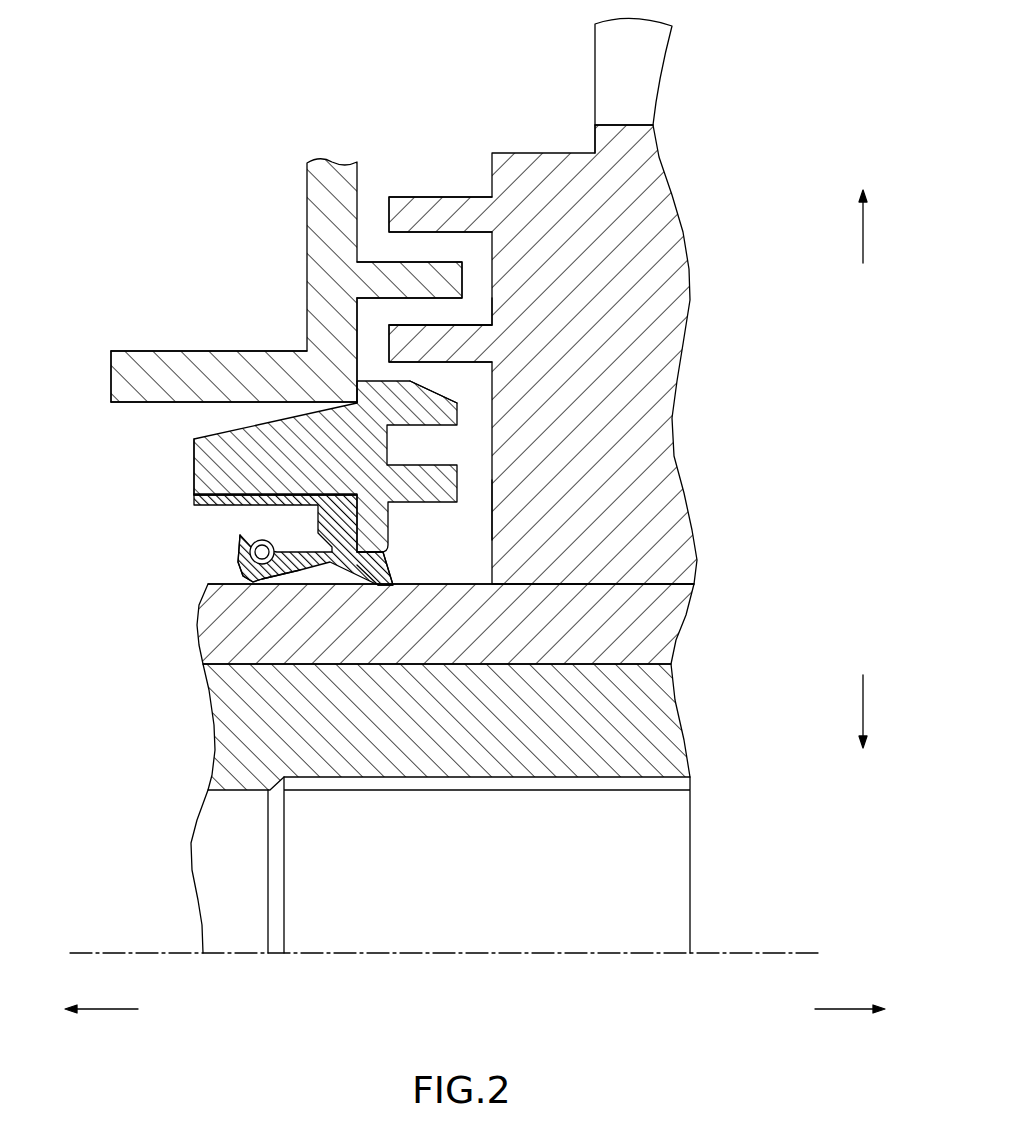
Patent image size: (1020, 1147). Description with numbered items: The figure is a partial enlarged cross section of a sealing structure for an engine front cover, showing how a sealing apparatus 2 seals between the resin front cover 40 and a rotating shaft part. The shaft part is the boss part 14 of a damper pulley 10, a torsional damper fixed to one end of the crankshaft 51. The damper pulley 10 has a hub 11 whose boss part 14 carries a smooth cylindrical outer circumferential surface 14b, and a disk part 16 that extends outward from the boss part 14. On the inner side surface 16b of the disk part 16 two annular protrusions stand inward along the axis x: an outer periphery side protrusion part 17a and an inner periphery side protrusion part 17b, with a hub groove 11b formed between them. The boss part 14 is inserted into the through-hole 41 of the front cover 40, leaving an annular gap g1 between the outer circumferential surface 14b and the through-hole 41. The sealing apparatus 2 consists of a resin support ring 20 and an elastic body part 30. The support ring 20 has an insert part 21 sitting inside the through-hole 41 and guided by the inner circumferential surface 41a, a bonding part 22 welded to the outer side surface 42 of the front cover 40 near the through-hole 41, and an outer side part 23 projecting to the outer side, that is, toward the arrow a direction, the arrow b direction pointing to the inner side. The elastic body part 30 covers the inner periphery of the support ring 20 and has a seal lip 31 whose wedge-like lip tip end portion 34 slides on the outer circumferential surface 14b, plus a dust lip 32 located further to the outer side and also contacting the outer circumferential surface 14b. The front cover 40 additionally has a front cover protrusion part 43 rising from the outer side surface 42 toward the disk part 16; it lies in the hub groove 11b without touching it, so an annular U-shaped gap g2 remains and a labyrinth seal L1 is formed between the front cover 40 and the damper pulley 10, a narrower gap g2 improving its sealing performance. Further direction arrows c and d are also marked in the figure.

The sealing apparatus 2 is at (418, 548).
The damper pulley 10 is at (660, 70).
The hub 11 is at (678, 468).
The hub groove 11b is at (405, 312).
The boss part 14 is at (227, 601).
The outer circumferential surface 14b is at (452, 583).
The disk part 16 is at (610, 157).
The inner side surface 16b is at (492, 518).
The outer periphery side protrusion part 17a is at (418, 207).
The inner periphery side protrusion part 17b is at (458, 352).
The support ring 20 is at (428, 385).
The insert part 21 is at (207, 469).
The bonding part 22 is at (356, 386).
The outer side part 23 is at (418, 408).
The elastic body part 30 is at (208, 531).
The seal lip 31 is at (330, 573).
The dust lip 32 is at (372, 581).
The lip tip end portion 34 is at (251, 582).
The front cover 40 is at (305, 187).
The through-hole 41 is at (133, 460).
The inner circumferential surface 41a is at (160, 404).
The outer side surface 42 is at (357, 347).
The front cover protrusion part 43 is at (418, 272).
The crankshaft 51 is at (653, 718).
The gap g1 is at (195, 547).
The gap g2 is at (482, 285).
The labyrinth seal L1 is at (500, 264).
The axis x is at (787, 952).
The arrow a direction a is at (850, 1009).
The arrow b direction b is at (105, 1009).
The direction c is at (863, 230).
The direction d is at (863, 700).